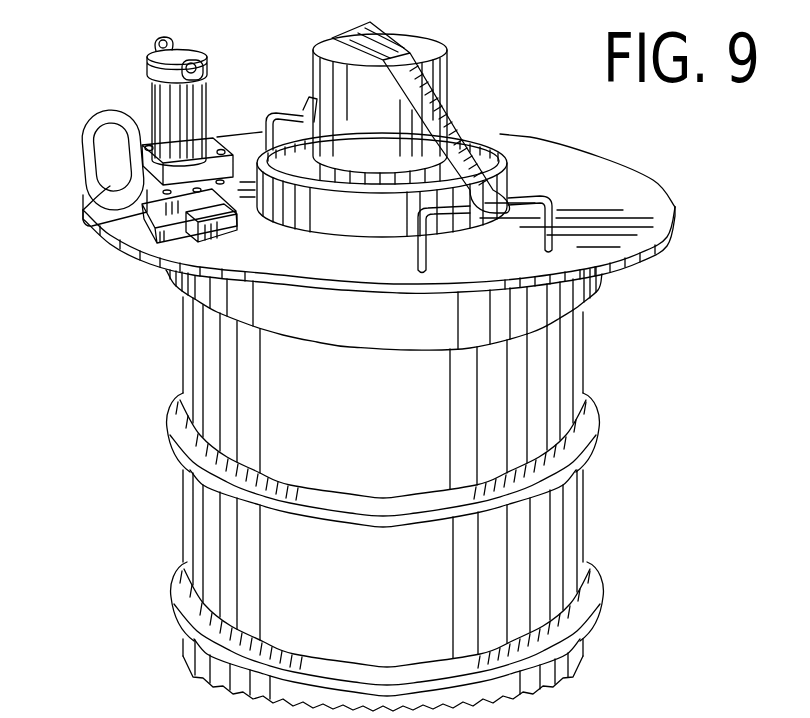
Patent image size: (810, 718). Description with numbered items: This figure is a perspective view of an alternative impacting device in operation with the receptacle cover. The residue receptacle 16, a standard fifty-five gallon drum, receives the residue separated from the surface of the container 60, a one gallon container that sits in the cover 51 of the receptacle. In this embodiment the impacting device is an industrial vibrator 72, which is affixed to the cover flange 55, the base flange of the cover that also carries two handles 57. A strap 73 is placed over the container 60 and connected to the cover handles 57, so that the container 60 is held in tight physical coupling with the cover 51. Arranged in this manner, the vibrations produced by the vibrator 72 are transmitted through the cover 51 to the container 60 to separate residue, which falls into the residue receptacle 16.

The residue receptacle 16 is at (612, 477).
The receptacle cover 51 is at (650, 192).
The base flange 55 is at (123, 225).
The cover handles 57 is at (266, 112).
The container 60 is at (440, 29).
The industrial vibrator 72 is at (150, 82).
The strap 73 is at (457, 120).